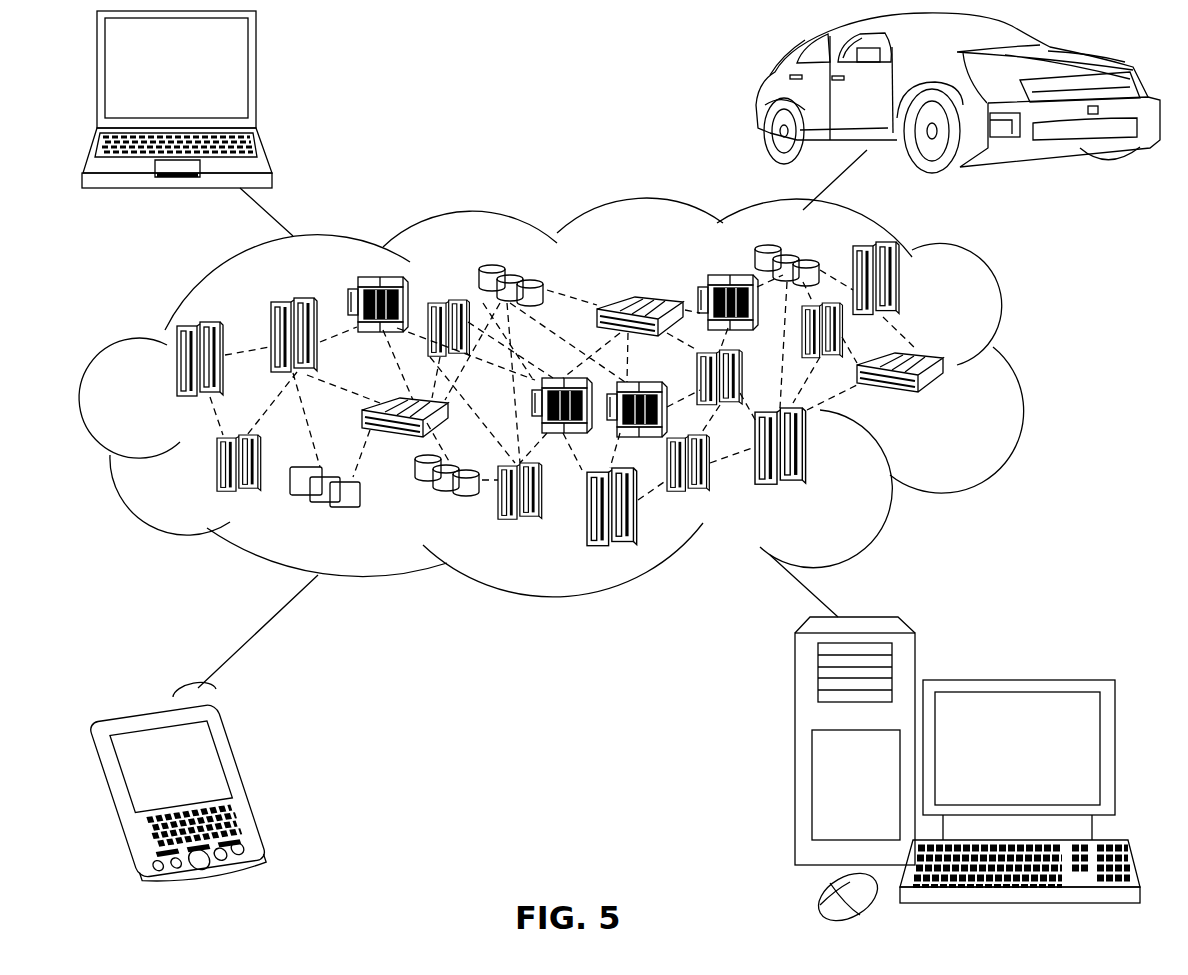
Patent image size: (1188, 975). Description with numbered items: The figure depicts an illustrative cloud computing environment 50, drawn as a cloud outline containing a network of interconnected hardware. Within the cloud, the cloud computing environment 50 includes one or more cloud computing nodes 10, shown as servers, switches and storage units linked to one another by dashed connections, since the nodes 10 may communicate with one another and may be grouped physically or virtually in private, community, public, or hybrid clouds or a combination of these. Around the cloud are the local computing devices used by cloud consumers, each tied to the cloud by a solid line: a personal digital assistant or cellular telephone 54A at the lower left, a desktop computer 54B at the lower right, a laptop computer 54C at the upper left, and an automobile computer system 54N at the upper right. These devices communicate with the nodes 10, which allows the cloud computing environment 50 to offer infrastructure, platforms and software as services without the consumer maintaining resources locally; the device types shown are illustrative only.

The cloud computing nodes 10 is at (946, 403).
The cloud computing environment 50 is at (1014, 368).
The personal digital assistant (PDA) or cellular telephone 54A is at (245, 782).
The desktop computer 54B is at (1016, 679).
The laptop computer 54C is at (257, 78).
The automobile computer system 54N is at (763, 95).